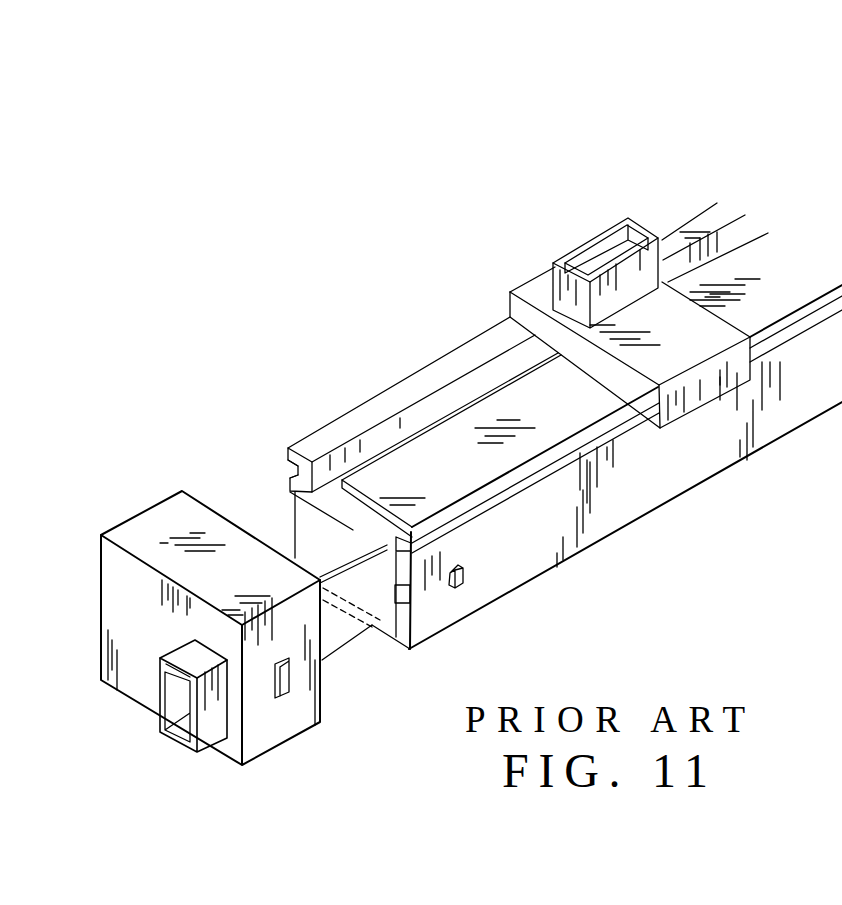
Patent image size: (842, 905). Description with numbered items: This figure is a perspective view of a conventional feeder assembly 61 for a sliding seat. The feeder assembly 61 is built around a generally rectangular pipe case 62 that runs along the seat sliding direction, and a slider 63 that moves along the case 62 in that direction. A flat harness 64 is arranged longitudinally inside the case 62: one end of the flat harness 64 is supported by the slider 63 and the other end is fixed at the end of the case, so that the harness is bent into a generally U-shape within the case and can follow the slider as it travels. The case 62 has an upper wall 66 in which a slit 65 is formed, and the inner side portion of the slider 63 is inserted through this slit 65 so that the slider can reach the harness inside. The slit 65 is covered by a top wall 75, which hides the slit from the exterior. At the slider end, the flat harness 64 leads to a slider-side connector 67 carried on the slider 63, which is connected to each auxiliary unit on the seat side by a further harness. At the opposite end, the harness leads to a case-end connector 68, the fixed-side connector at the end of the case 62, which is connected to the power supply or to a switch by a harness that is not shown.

The feeder assembly 61 is at (412, 213).
The pipe case 62 is at (590, 546).
The slider 63 is at (540, 284).
The flat harness 64 is at (352, 648).
The slit 65 is at (383, 552).
The upper wall 66 is at (303, 522).
The slider-side connector 67 is at (599, 236).
The case-end connector 68 is at (207, 737).
The top wall 75 is at (455, 437).